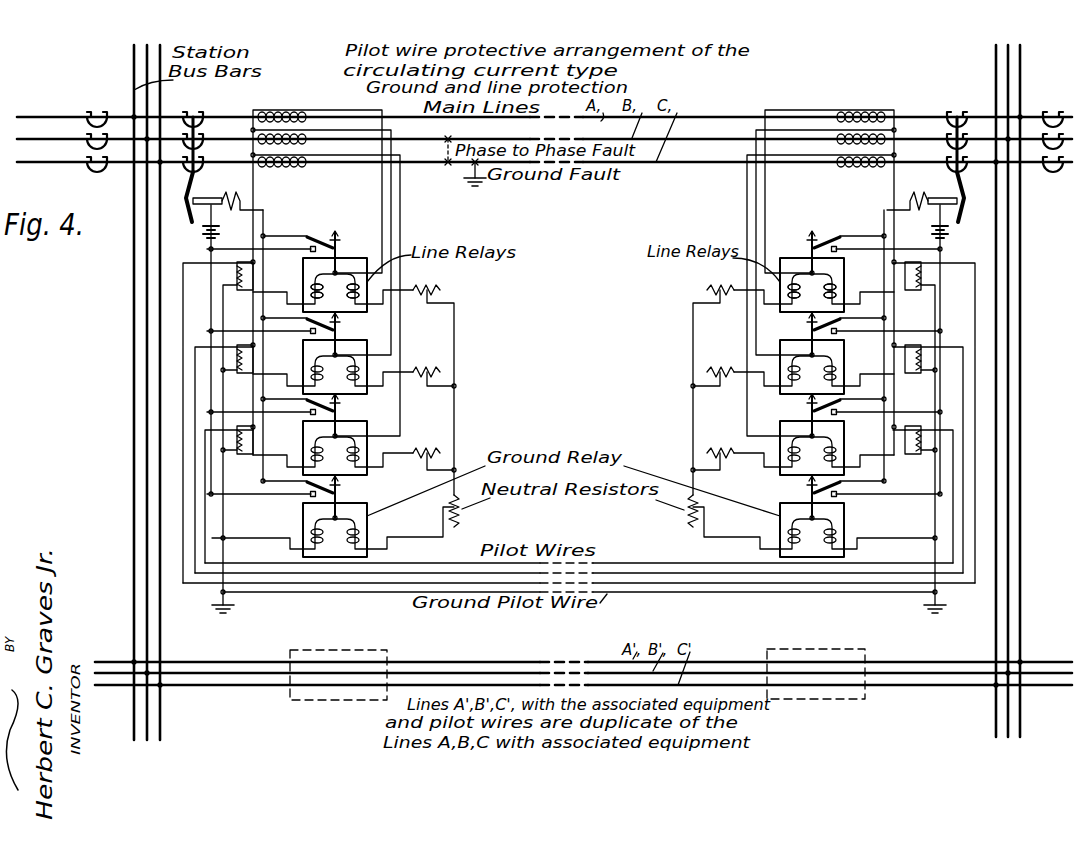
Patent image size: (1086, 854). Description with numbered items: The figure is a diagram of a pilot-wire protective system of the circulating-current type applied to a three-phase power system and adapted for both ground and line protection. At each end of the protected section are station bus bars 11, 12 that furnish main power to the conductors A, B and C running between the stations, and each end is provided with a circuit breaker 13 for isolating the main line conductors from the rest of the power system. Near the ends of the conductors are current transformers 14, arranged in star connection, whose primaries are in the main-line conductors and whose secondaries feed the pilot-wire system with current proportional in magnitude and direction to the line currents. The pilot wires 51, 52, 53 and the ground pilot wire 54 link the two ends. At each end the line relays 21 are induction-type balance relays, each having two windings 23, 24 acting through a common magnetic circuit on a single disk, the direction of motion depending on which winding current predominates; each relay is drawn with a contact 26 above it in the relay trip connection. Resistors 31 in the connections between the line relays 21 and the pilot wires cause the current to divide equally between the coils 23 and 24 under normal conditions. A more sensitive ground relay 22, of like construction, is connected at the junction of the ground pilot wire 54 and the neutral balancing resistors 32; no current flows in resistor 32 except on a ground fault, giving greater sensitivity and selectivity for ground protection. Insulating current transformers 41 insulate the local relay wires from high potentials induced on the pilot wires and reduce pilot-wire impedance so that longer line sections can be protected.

The station bus bars 11 is at (124, 76).
The station bus bars 12 is at (1045, 75).
The circuit breaker 13 is at (99, 116).
The current transformer 14 is at (288, 109).
The line relay 21 is at (358, 238).
The ground relay 22 is at (389, 501).
The winding 23 is at (305, 283).
The winding 24 is at (352, 272).
The relay contacts 26 is at (318, 243).
The resistors 31 is at (437, 289).
The neutral balancing resistor 32 is at (462, 514).
The insulating current transformers 41 is at (237, 277).
The pilot wire 51 is at (598, 563).
The pilot wire 52 is at (650, 572).
The pilot wire 53 is at (683, 582).
The ground pilot wire 54 is at (666, 604).